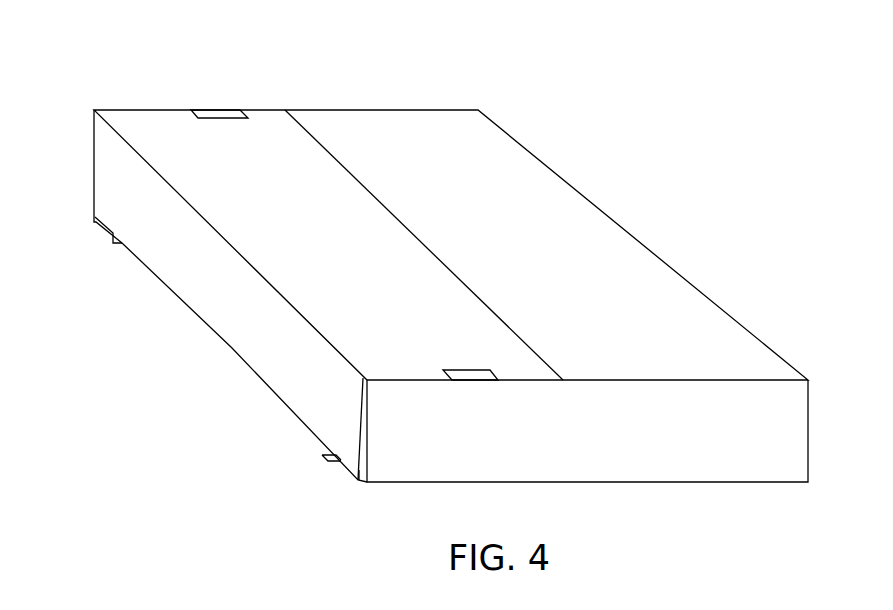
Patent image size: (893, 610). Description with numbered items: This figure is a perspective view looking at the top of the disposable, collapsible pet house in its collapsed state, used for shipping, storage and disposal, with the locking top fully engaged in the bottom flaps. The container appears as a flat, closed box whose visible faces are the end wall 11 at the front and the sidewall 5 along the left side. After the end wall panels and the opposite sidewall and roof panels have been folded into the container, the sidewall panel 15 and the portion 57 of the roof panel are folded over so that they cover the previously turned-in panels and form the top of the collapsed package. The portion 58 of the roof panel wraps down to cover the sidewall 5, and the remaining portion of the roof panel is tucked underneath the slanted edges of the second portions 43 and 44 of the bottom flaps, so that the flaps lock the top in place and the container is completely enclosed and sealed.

The sidewall 5 is at (359, 474).
The end wall 11 is at (683, 462).
The sidewall panel 15 is at (585, 224).
The second portion of flap 43 is at (328, 461).
The second portion of flap 44 is at (112, 233).
The portion of roof panel 57 is at (163, 135).
The portion of roof panel 58 is at (228, 303).